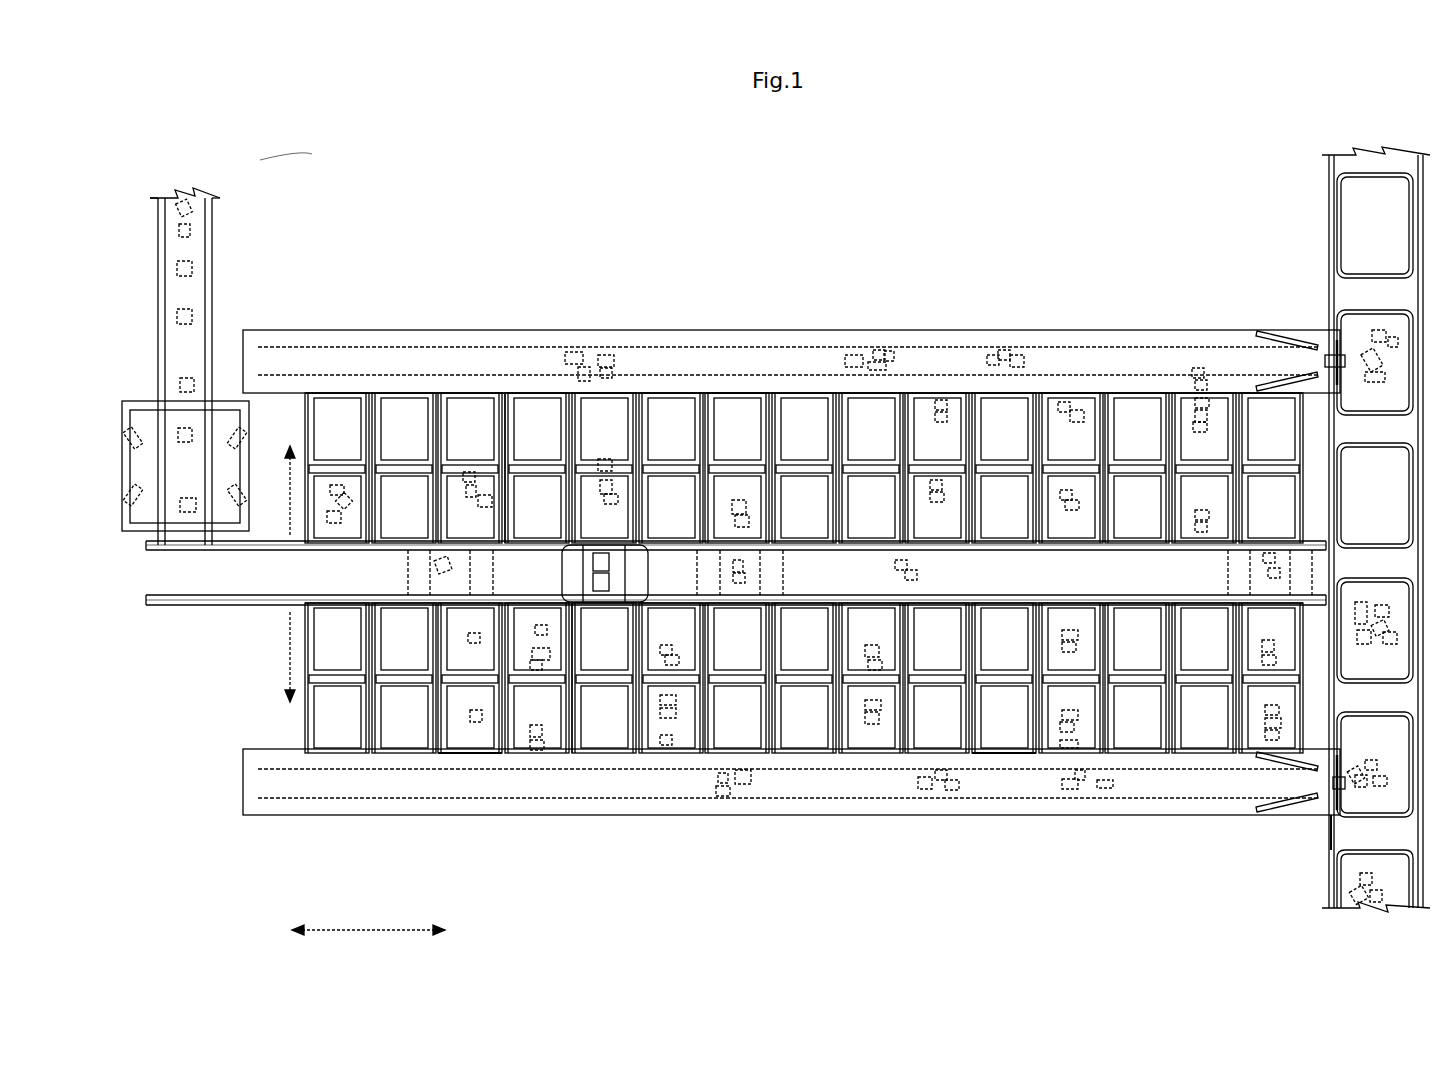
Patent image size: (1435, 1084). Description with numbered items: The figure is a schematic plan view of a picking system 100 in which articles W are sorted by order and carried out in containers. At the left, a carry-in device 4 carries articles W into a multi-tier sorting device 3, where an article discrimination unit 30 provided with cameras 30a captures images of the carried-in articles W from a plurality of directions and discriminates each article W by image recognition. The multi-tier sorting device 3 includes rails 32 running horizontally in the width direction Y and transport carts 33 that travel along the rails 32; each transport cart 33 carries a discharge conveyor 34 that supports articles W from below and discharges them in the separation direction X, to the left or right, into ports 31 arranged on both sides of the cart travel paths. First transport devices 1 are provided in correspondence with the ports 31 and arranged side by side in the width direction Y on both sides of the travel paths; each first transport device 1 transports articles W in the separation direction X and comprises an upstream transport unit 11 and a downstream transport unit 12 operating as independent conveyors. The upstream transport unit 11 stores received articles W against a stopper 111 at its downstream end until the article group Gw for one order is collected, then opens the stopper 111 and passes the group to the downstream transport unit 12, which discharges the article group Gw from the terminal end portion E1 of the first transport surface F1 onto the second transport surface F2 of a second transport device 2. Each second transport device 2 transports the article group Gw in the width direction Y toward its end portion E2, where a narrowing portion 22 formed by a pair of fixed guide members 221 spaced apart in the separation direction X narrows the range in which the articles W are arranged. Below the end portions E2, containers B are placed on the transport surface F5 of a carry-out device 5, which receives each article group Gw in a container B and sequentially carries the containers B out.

The picking system 100 is at (308, 155).
The carry-in device 4 is at (228, 215).
The article discrimination unit 30 is at (255, 398).
The cameras 30a is at (136, 428).
The articles W is at (192, 316).
The second transport devices 2 is at (940, 318).
The second transport surface F2 is at (383, 345).
The first transport surface F1 is at (632, 393).
The first transport devices 1 is at (450, 393).
The upstream transport unit 11 is at (515, 487).
The stopper 111 is at (403, 465).
The downstream transport unit 12 is at (515, 485).
The terminal end portion E1 is at (735, 393).
The article group Gw is at (592, 352).
The multi-tier sorting device 3 is at (238, 630).
The ports 31 is at (345, 550).
The rails 32 is at (1085, 573).
The transport carts 33 is at (562, 575).
The discharge conveyor 34 is at (622, 555).
The separation direction X is at (280, 574).
The width direction Y is at (368, 917).
The carry-out device 5 is at (1315, 195).
The containers B is at (1350, 325).
The end portions E2 is at (1348, 352).
The guide members 221 is at (1300, 346).
The narrowing portion 22 is at (1310, 359).
The transport surface F5 is at (1345, 833).